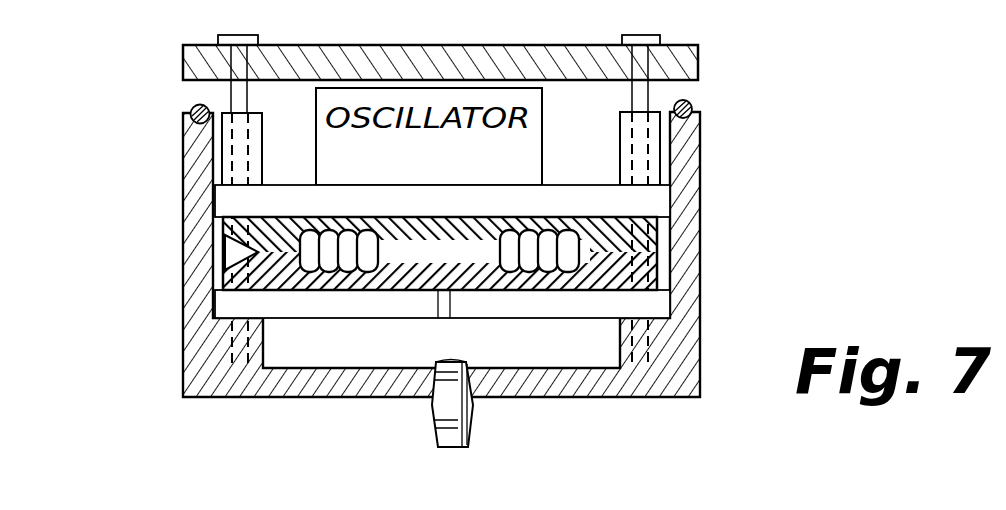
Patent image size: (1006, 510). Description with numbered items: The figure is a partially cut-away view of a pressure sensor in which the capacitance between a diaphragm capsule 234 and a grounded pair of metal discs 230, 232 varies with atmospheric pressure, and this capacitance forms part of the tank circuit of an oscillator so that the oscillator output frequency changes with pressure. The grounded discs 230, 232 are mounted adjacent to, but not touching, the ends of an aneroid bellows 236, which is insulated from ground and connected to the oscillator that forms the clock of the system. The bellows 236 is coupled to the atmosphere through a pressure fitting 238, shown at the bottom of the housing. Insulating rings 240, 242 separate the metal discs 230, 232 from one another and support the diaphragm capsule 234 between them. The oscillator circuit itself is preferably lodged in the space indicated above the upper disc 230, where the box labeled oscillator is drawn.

The metal disc 230 is at (492, 188).
The metal disc 232 is at (495, 310).
The diaphragm capsule 234 is at (700, 152).
The aneroid bellows 236 is at (657, 238).
The pressure fitting 238 is at (473, 425).
The insulating ring 240 is at (657, 277).
The insulating ring 242 is at (225, 233).